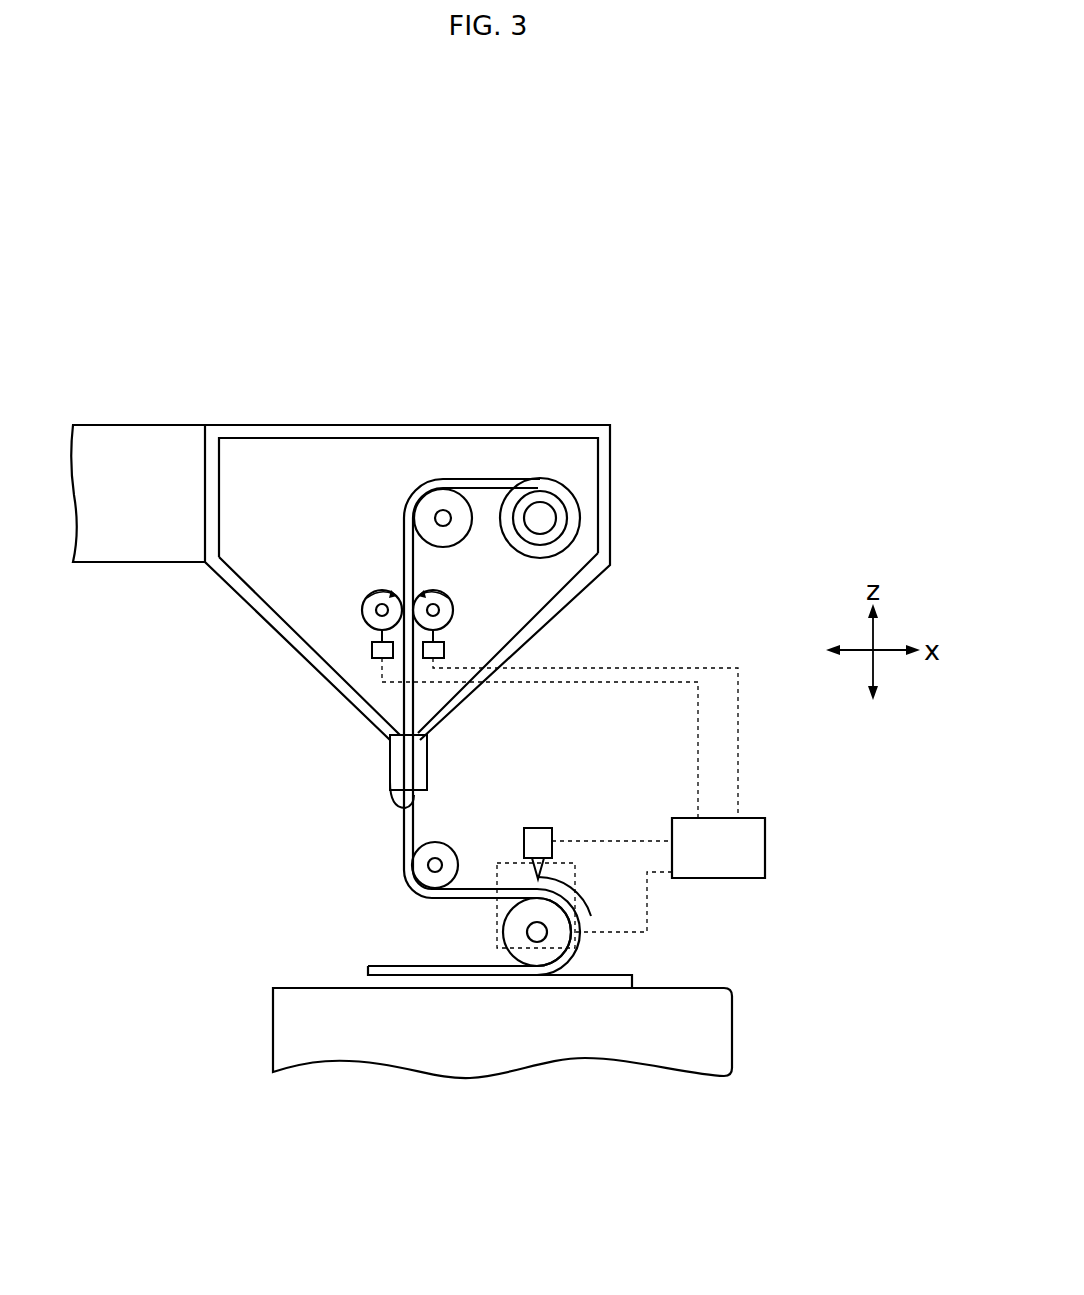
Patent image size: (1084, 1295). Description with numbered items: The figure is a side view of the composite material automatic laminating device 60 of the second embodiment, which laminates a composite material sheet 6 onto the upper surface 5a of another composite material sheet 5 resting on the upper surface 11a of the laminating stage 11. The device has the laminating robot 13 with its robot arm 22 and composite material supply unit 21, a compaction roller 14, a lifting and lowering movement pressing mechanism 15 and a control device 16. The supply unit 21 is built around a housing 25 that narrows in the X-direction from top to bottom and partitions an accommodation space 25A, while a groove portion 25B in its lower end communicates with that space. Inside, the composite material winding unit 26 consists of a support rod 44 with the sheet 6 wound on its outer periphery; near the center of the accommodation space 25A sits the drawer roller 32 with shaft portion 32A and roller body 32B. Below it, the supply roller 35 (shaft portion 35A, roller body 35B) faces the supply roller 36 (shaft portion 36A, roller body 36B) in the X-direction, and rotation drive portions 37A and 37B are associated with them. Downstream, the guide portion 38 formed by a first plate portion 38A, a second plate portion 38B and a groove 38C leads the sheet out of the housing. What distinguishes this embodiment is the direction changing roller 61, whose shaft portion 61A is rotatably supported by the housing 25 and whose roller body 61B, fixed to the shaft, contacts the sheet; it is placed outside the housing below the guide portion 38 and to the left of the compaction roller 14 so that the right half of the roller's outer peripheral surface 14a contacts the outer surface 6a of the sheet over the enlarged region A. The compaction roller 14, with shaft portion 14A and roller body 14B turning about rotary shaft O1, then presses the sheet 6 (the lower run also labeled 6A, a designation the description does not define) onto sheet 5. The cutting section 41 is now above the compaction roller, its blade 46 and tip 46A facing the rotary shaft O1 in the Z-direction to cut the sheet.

The composite material automatic laminating device 60 is at (65, 229).
The laminating robot 13 is at (255, 316).
The robot arm 22 is at (155, 440).
The composite material supply unit 21 is at (239, 410).
The housing 25 is at (408, 527).
The accommodation space 25A is at (318, 470).
The groove portion 25B is at (392, 738).
The composite material sheet 6 is at (512, 480).
The tube end 6A is at (337, 1138).
The drawer roller 32 is at (484, 412).
The shaft portion 32A is at (449, 515).
The roller body 32B is at (438, 500).
The composite material winding unit 26 is at (635, 471).
The support rod 44 is at (550, 510).
The supply roller 35 is at (580, 612).
The shaft portion 35A is at (439, 612).
The roller body 35B is at (452, 603).
The supply roller 36 is at (392, 704).
The shaft portion 36A is at (376, 610).
The roller body 36B is at (368, 620).
The rotation drive portion 37A is at (445, 650).
The rotation drive portion 37B is at (372, 650).
The guide portion 38 is at (502, 750).
The first plate portion 38A is at (425, 745).
The second plate portion 38B is at (418, 770).
The groove 38C is at (408, 805).
The direction changing roller 61 is at (345, 860).
The shaft portion 61A is at (432, 864).
The roller body 61B is at (414, 876).
The cutting section 41 is at (566, 826).
The blade 46 is at (522, 868).
The tip 46A is at (535, 882).
The region A is at (597, 913).
The control device 16 is at (766, 849).
The lifting and lowering movement pressing mechanism 15 is at (497, 906).
The compaction roller 14 is at (505, 1042).
The shaft portion 14A is at (533, 940).
The roller body 14B is at (551, 955).
The outer peripheral surface 14a is at (591, 918).
The rotary shaft O1 is at (532, 935).
The composite material sheet 5 is at (620, 983).
The upper surface 5a is at (615, 968).
The outer surface 6a is at (396, 968).
The laminating stage 11 is at (697, 1060).
The upper surface 11a is at (724, 988).